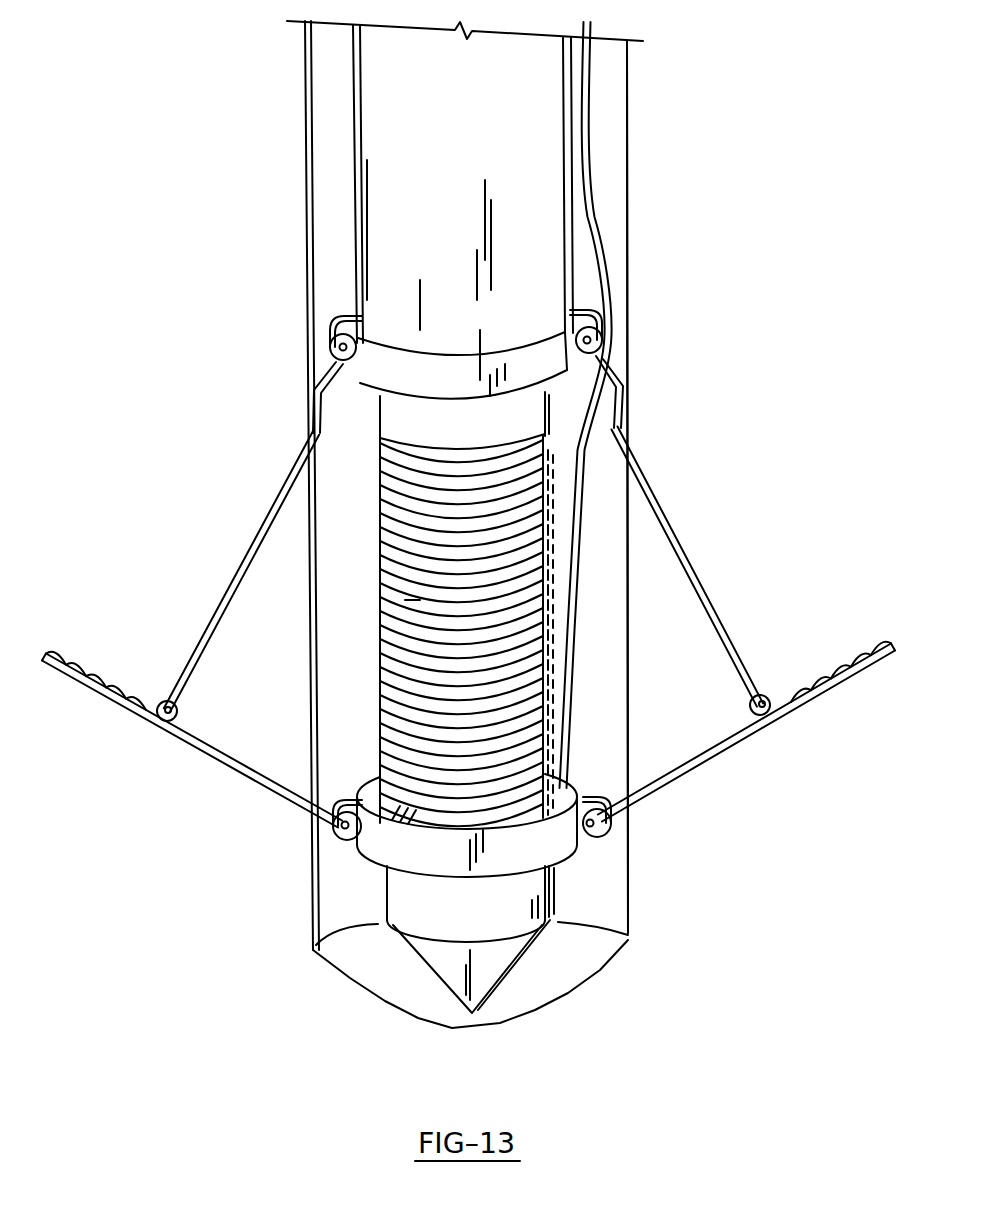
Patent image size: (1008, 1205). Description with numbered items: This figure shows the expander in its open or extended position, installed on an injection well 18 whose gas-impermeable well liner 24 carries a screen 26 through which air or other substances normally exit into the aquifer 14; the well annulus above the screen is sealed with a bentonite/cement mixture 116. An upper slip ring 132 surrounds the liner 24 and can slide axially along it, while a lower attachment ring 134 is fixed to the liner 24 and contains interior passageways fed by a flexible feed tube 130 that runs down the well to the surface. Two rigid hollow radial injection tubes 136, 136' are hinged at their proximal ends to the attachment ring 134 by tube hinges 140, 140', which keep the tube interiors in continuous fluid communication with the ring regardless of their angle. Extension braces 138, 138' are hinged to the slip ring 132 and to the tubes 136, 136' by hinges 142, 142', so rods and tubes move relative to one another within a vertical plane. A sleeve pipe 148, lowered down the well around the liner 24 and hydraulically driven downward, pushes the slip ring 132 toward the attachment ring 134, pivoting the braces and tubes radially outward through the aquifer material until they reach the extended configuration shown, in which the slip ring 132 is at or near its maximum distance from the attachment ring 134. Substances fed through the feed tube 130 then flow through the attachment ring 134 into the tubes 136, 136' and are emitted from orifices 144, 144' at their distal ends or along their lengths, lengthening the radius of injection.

The aquifer 14 is at (836, 286).
The injection well 18 is at (305, 245).
The well liner 24 is at (380, 547).
The screen 26 is at (415, 603).
The bentonite/cement mixture 116 is at (330, 192).
The flexible feed tube 130 is at (597, 237).
The upper slip ring 132 is at (550, 360).
The lower attachment ring 134 is at (543, 855).
The radial injection tube 136 is at (192, 779).
The radial injection tube 136' is at (746, 736).
The extension brace 138 is at (253, 537).
The extension brace 138' is at (694, 531).
The tube hinge 140 is at (285, 883).
The tube hinge 140' is at (674, 837).
The hinge 142 is at (116, 761).
The hinge 142' is at (825, 737).
The orifices 144 is at (94, 635).
The orifices 144' is at (841, 642).
The sleeve pipe 148 is at (410, 282).